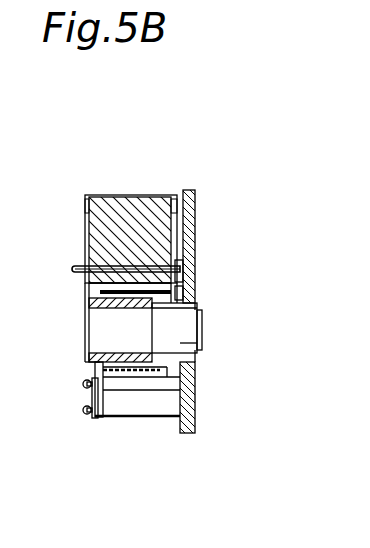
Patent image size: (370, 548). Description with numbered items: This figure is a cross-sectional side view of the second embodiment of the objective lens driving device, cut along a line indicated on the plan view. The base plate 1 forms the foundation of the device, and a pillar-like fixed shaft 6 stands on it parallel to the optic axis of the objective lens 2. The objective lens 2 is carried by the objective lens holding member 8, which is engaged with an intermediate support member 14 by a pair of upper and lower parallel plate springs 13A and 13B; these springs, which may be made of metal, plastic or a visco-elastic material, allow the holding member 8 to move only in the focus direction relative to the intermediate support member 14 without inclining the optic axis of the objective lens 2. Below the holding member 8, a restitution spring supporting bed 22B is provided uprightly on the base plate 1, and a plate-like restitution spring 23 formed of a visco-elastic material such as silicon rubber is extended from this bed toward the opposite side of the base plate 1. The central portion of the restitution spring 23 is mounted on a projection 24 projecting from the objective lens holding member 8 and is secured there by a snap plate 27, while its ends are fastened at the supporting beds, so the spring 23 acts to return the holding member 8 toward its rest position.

The base plate 1 is at (197, 228).
The objective lens 2 is at (197, 340).
The fixed shaft 6 is at (74, 266).
The objective lens holding member 8 is at (84, 303).
The parallel plate spring 13A is at (85, 293).
The parallel plate spring 13B is at (183, 283).
The intermediate support member 14 is at (152, 193).
The restitution spring supporting bed 22B is at (167, 408).
The restitution spring 23 is at (87, 398).
The projection 24 is at (105, 403).
The snap plate 27 is at (90, 393).